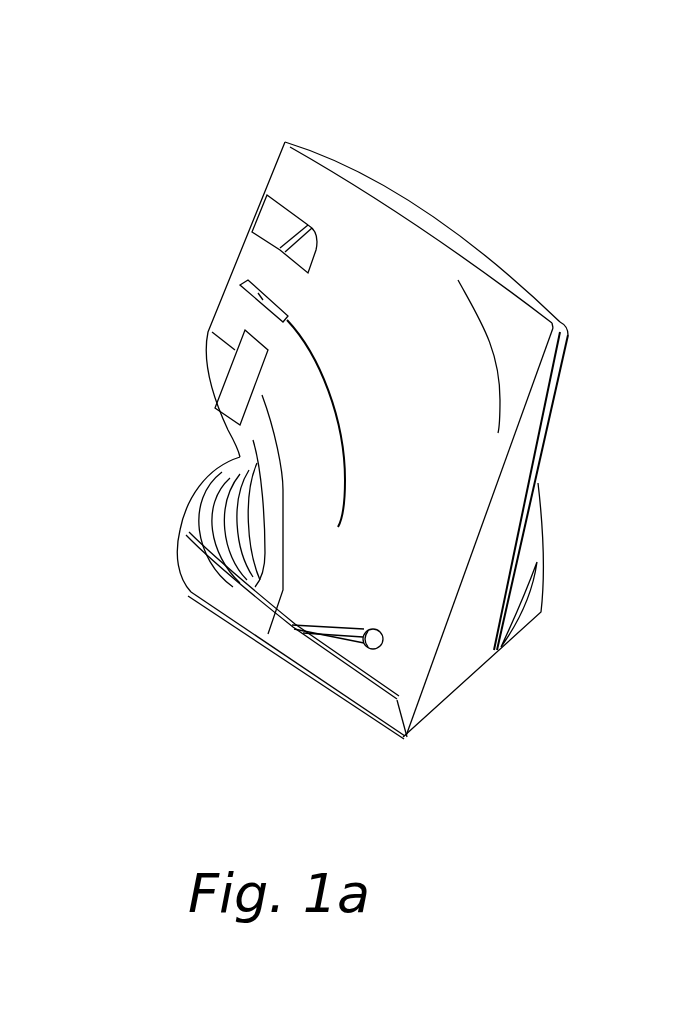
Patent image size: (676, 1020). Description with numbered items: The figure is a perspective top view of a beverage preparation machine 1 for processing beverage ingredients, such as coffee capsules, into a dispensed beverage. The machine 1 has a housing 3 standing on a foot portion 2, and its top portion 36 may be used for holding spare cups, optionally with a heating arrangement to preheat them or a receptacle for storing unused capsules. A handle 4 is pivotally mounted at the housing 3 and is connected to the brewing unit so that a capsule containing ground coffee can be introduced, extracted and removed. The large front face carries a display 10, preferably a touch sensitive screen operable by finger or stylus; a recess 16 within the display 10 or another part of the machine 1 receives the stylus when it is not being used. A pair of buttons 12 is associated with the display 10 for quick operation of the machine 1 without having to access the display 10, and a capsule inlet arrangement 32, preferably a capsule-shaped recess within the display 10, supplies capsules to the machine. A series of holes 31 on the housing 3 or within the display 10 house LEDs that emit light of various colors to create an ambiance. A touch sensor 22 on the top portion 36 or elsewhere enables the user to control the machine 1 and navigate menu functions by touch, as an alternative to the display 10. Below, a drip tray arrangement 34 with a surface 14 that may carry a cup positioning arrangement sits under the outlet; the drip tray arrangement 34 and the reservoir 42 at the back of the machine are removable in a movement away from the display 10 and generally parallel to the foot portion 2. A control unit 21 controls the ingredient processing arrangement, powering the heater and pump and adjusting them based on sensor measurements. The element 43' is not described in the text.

The beverage preparation machine 1 is at (555, 125).
The foot portion 2 is at (388, 733).
The housing 3 is at (448, 668).
The handle 4 is at (243, 374).
The display 10 is at (417, 337).
The buttons 12 is at (238, 278).
The surface 14 is at (203, 518).
The recess 16 is at (364, 652).
The control unit 21 is at (570, 337).
The touch sensor 22 is at (420, 207).
The holes 31 is at (320, 367).
The capsule inlet arrangement 32 is at (277, 223).
The drip tray arrangement 34 is at (208, 587).
The top portion 36 is at (517, 292).
The reservoir 42 is at (534, 538).
The spring tongues 43' is at (192, 503).